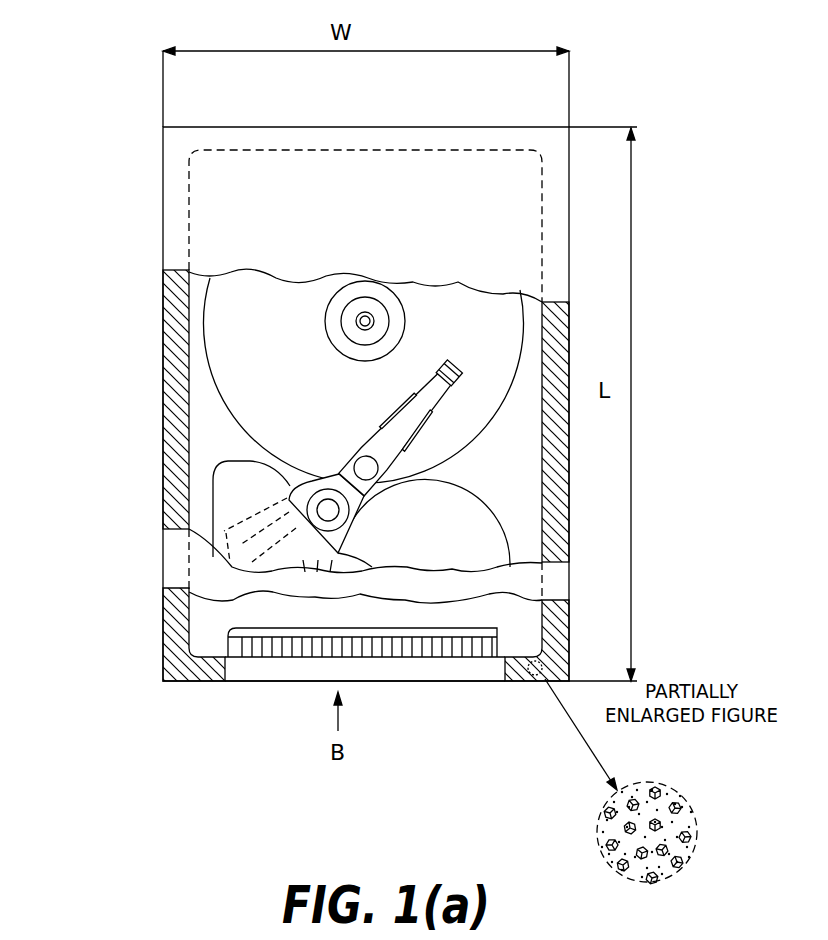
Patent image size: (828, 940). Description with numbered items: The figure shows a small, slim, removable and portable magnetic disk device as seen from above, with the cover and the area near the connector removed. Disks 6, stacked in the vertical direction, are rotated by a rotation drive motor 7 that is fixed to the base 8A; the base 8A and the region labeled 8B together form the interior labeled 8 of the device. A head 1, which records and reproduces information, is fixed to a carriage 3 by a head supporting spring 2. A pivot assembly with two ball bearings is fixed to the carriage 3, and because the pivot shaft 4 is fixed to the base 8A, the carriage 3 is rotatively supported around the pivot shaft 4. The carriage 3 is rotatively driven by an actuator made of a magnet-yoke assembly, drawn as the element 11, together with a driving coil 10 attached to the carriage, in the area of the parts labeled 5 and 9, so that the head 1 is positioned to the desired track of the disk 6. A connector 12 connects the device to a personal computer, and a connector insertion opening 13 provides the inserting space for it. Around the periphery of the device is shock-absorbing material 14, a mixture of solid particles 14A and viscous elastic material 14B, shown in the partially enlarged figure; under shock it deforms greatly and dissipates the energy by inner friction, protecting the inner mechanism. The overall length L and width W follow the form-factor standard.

The head 1 is at (453, 371).
The head supporting spring 2 is at (454, 380).
The carriage 3 is at (360, 454).
The pivot shaft 4 is at (336, 508).
The voice coil 5 is at (337, 522).
The disk 6 is at (460, 430).
The rotation drive motor 7 is at (362, 324).
The fluid filling the housing 8 is at (70, 233).
The base 8A is at (203, 404).
The gas portion 8B is at (222, 233).
The stopper 9 is at (240, 464).
The driving coil 10 is at (236, 562).
The magnet yoke 11 is at (468, 505).
The connector 12 is at (382, 632).
The connector insertion opening 13 is at (450, 673).
The shock-absorbing material 14 is at (562, 638).
The solid particles 14A is at (670, 792).
The viscous elastic material 14B is at (665, 873).